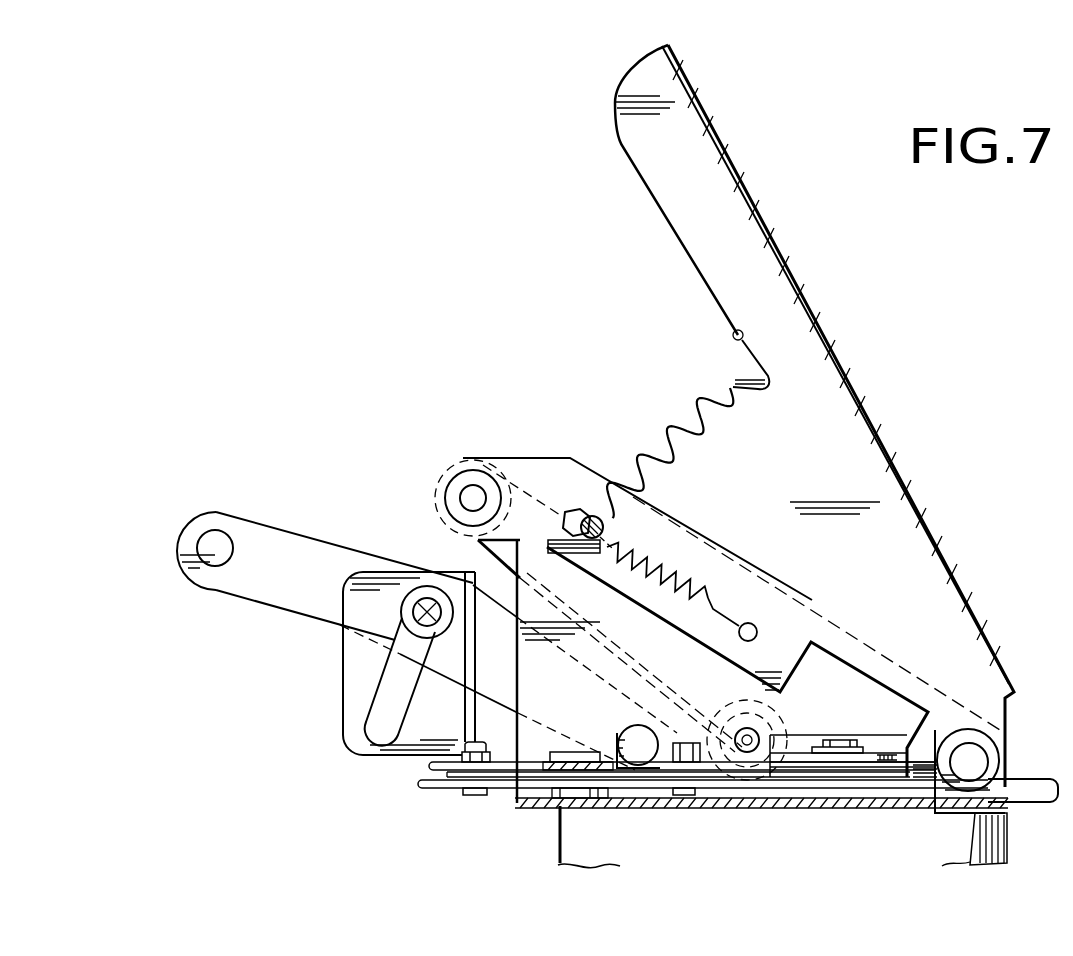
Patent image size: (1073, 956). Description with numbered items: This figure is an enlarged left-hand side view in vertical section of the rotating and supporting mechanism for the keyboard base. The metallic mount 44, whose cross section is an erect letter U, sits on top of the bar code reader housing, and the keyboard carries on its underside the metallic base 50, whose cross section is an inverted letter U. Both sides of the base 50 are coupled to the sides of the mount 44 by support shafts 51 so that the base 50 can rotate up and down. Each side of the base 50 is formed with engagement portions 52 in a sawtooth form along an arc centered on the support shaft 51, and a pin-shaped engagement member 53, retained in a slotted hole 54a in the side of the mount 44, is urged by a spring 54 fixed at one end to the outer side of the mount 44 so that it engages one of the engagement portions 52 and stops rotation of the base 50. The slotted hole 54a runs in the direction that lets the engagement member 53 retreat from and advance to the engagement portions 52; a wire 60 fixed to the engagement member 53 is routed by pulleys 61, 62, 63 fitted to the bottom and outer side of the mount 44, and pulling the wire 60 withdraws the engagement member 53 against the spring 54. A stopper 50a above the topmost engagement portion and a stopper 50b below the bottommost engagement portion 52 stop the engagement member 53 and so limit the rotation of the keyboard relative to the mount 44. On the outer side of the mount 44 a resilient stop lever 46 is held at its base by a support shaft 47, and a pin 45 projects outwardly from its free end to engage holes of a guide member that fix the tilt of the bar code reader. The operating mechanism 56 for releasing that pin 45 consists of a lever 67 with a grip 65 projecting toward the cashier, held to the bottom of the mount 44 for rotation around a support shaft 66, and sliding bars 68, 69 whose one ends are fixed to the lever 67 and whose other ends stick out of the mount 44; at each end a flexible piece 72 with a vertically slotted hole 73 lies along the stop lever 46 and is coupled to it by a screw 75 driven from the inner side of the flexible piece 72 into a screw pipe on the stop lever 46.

The mount 44 is at (694, 808).
The pin 45 is at (215, 530).
The stop lever 46 is at (302, 555).
The support shaft 47 is at (635, 757).
The base 50 is at (695, 133).
The stopper 50a is at (753, 330).
The stopper 50b is at (540, 498).
The support shaft 51 is at (973, 753).
The engagement portions 52 is at (663, 425).
The engagement member 53 is at (595, 516).
The spring 54 is at (710, 590).
The slotted hole 54a is at (575, 512).
The operating mechanism 56 is at (812, 790).
The wire 60 is at (478, 548).
The pulley 61 is at (877, 757).
The pulley 62 is at (777, 797).
The pulley 63 is at (450, 476).
The grip 65 is at (1037, 800).
The support shaft 66 is at (577, 775).
The lever 67 is at (868, 790).
The sliding bar 68 is at (480, 795).
The sliding bar 69 is at (543, 797).
The flexible piece 72 is at (357, 657).
The slotted hole 73 is at (375, 703).
The screw 75 is at (418, 598).